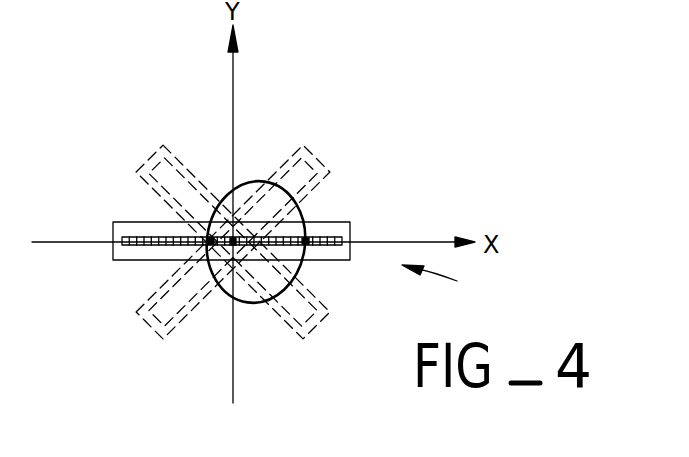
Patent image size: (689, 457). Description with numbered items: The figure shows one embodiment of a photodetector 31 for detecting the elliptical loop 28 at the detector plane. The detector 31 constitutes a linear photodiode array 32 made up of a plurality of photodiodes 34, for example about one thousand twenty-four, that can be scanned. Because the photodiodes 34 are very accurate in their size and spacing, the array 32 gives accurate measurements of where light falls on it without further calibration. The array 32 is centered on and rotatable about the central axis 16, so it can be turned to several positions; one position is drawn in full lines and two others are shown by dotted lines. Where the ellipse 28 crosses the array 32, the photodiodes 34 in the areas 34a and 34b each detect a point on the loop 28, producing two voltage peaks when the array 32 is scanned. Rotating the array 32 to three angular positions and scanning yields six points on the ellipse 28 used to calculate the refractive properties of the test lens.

The central axis 16 is at (233, 246).
The elliptical loop 28 is at (246, 183).
The photodetector 31 is at (449, 283).
The linear photodiode array 32 is at (162, 143).
The photodiodes 34 is at (145, 246).
The area of the array 34a is at (305, 242).
The area of the array 34b is at (212, 245).